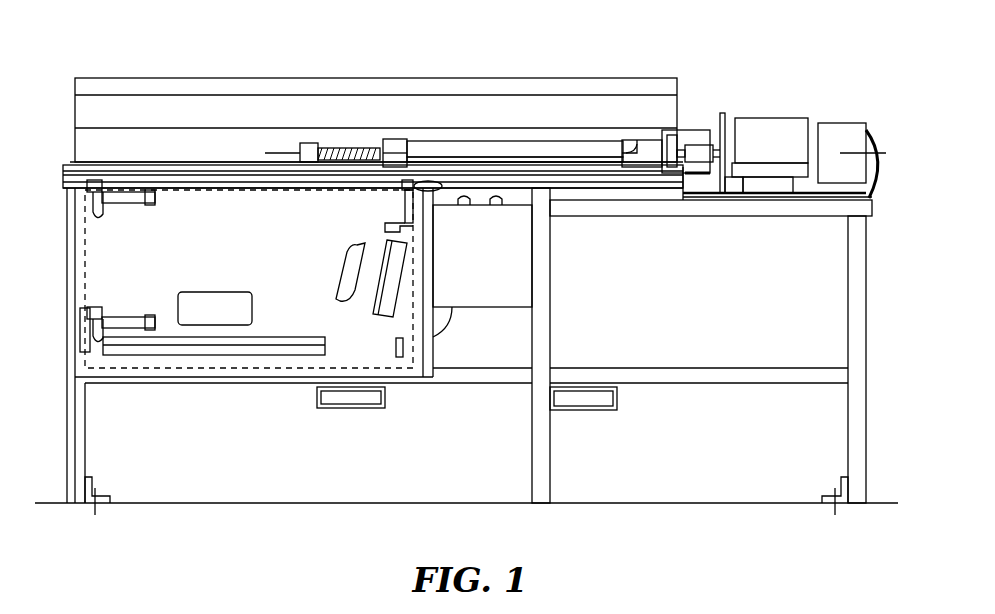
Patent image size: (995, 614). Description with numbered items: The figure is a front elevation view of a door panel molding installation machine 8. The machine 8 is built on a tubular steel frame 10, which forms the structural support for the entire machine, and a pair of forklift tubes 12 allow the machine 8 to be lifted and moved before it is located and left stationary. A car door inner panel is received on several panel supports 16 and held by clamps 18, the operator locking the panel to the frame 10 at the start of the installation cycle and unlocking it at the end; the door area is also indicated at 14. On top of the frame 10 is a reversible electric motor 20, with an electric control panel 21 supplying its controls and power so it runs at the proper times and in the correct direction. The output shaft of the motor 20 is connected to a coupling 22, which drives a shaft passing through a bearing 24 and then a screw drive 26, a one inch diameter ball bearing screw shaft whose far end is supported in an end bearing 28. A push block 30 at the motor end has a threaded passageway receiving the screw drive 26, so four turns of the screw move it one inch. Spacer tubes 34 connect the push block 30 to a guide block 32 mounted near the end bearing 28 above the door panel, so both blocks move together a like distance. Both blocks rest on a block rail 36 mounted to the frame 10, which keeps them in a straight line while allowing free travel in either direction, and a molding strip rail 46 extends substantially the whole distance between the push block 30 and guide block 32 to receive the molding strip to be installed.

The door panel molding installation machine 8 is at (128, 68).
The tubular steel frame 10 is at (72, 178).
The forklift tubes 12 is at (352, 410).
The door panel 14 is at (88, 415).
The panel supports 16 is at (380, 300).
The clamps 18 is at (115, 200).
The reversible electric motor 20 is at (832, 136).
The electric control panel 21 is at (510, 288).
The coupling 22 is at (698, 150).
The bearing 24 is at (672, 135).
The screw drive 26 is at (347, 148).
The end bearing 28 is at (312, 143).
The push block 30 is at (648, 148).
The guide block 32 is at (397, 139).
The spacer tubes 34 is at (500, 156).
The block rail 36 is at (237, 162).
The molding strip rail 46 is at (447, 148).